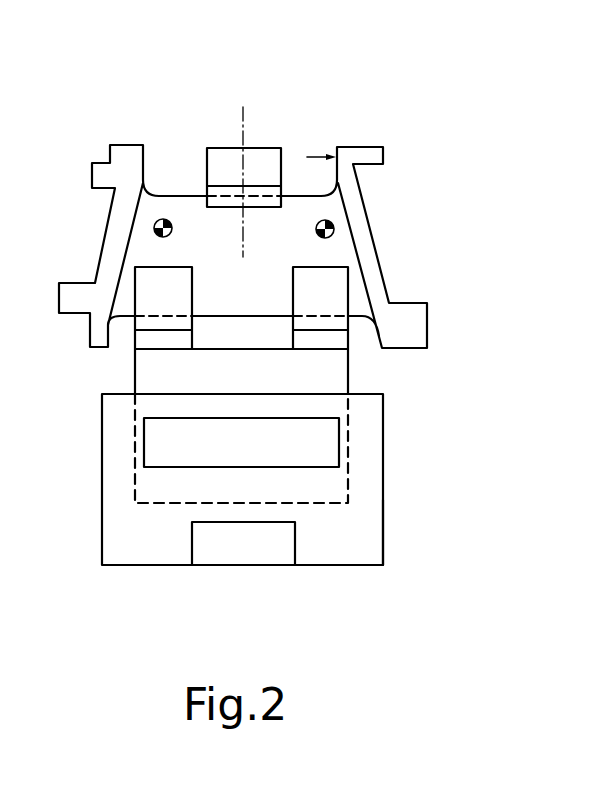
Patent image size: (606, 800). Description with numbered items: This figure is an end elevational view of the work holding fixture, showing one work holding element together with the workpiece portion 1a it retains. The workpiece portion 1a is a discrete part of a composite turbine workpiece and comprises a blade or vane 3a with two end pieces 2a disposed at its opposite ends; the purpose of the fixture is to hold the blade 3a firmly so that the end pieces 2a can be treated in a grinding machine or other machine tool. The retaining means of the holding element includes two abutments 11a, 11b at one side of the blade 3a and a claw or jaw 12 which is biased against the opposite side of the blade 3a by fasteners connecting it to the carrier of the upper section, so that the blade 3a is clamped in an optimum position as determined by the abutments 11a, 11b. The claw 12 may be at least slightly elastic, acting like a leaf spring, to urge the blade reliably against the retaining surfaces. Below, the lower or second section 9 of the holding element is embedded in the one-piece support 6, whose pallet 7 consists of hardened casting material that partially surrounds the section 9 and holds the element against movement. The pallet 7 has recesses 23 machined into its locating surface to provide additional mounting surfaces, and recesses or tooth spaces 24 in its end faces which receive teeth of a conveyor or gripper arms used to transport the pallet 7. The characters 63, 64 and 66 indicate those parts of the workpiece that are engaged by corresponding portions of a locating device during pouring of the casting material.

The workpiece portion 1a is at (254, 177).
The end pieces 2a is at (127, 150).
The blade or vane 3a is at (260, 299).
The support 6 is at (400, 482).
The pallet 7 is at (365, 540).
The second section 9 is at (152, 490).
The abutment 11a is at (160, 282).
The abutment 11b is at (326, 290).
The claw or jaw 12 is at (221, 160).
The recesses 23 is at (253, 552).
The recesses or tooth spaces 24 is at (172, 442).
The engaged workpiece part 63 is at (174, 229).
The engaged workpiece part 64 is at (171, 186).
The engaged workpiece part 66 is at (318, 156).